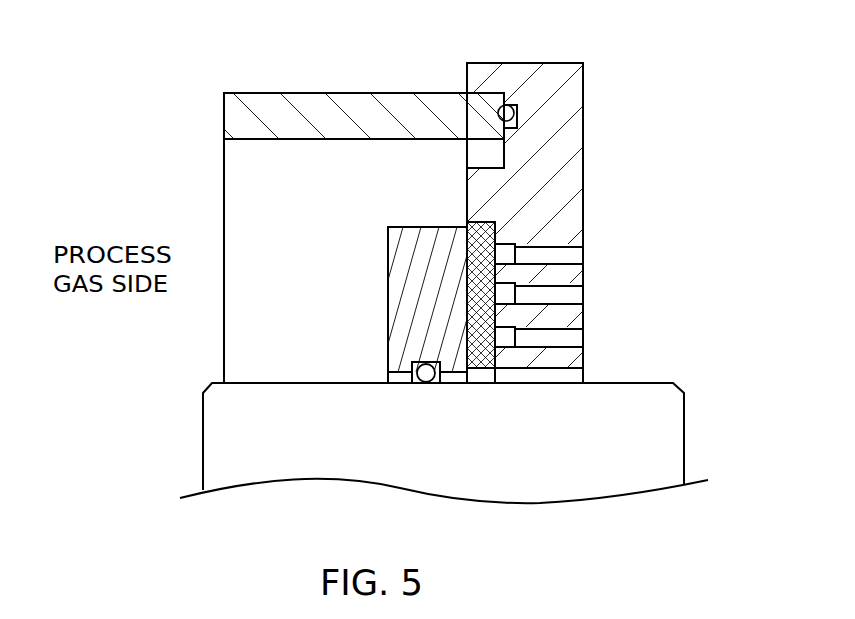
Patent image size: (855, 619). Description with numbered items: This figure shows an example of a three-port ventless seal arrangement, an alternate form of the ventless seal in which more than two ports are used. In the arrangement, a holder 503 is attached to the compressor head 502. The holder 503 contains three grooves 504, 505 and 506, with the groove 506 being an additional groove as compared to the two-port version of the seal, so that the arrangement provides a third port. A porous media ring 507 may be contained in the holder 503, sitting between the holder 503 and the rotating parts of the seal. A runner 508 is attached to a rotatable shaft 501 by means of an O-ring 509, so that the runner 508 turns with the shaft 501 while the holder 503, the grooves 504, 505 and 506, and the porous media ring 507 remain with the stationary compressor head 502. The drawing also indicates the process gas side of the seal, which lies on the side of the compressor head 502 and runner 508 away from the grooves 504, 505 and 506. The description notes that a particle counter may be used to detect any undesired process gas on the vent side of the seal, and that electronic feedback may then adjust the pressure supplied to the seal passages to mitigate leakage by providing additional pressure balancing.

The rotatable shaft 501 is at (684, 428).
The compressor head 502 is at (300, 93).
The holder 503 is at (583, 93).
The groove 504 is at (584, 253).
The groove 505 is at (584, 292).
The groove 506 is at (584, 330).
The porous media ring 507 is at (483, 222).
The runner 508 is at (388, 275).
The O-ring 509 is at (431, 382).